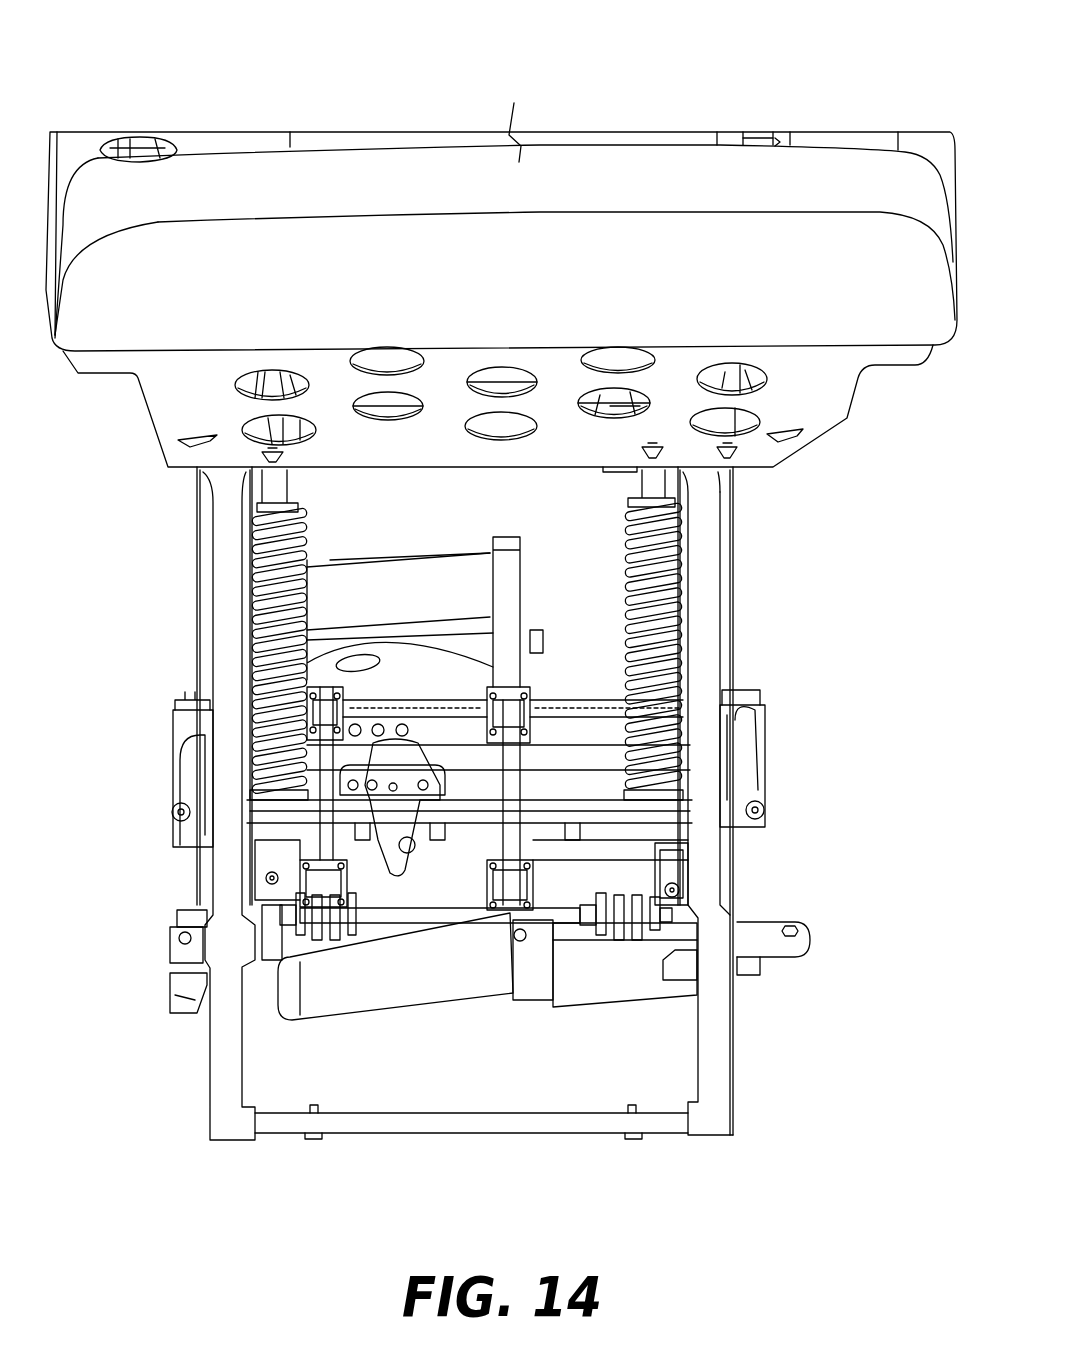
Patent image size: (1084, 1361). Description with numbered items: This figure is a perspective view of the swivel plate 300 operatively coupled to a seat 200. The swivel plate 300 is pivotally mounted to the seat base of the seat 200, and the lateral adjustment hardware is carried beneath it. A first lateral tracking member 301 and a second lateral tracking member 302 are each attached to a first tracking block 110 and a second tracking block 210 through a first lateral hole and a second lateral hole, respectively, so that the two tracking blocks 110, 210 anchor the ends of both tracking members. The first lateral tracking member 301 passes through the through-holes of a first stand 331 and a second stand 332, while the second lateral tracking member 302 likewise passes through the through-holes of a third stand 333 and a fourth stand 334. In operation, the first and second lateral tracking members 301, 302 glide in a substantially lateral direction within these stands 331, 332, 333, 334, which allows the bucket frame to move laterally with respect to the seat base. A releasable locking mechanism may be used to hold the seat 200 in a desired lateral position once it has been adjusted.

The seat 200 is at (160, 82).
The second tracking block 210 is at (273, 866).
The first tracking block 110 is at (663, 875).
The swivel plate 300 is at (415, 677).
The first lateral tracking member 301 is at (407, 913).
The second lateral tracking member 302 is at (448, 707).
The first stand 331 is at (503, 913).
The second stand 332 is at (310, 875).
The third stand 333 is at (543, 660).
The fourth stand 334 is at (253, 665).